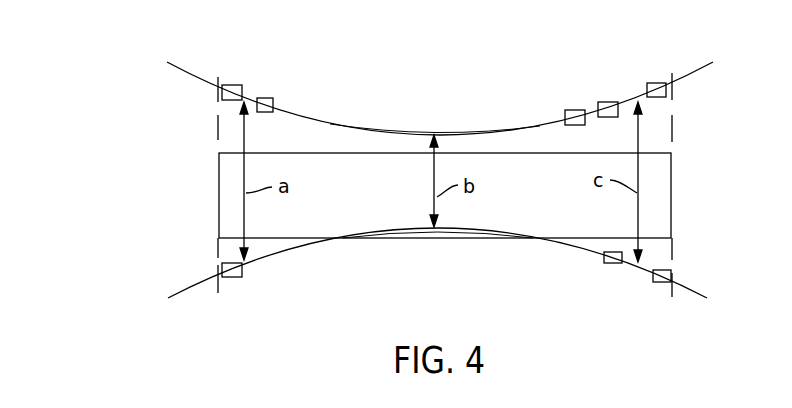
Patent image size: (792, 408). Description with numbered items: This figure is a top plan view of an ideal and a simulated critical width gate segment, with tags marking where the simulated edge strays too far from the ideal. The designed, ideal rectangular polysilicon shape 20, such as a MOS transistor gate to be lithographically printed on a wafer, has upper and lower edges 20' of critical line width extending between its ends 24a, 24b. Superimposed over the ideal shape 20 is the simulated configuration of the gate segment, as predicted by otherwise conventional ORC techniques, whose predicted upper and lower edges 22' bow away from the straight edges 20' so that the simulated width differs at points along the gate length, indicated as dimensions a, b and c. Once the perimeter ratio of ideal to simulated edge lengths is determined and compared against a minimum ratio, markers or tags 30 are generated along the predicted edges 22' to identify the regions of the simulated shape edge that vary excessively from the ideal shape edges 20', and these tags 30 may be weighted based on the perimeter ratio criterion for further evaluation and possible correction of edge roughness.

The critical width rectangular polysilicon shape 20 is at (479, 195).
The upper and lower edges 20' is at (440, 180).
The predicted upper and lower edges 22' is at (451, 187).
The end 24a is at (217, 123).
The end 24b is at (673, 127).
The tags 30 is at (242, 87).